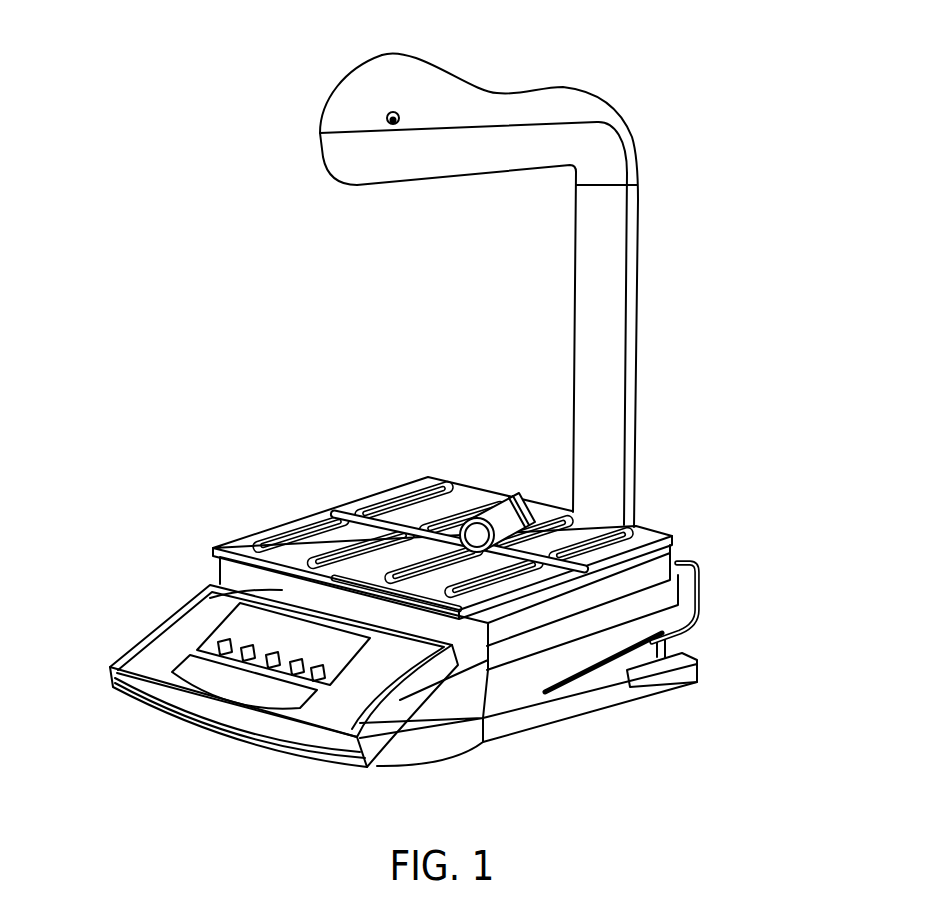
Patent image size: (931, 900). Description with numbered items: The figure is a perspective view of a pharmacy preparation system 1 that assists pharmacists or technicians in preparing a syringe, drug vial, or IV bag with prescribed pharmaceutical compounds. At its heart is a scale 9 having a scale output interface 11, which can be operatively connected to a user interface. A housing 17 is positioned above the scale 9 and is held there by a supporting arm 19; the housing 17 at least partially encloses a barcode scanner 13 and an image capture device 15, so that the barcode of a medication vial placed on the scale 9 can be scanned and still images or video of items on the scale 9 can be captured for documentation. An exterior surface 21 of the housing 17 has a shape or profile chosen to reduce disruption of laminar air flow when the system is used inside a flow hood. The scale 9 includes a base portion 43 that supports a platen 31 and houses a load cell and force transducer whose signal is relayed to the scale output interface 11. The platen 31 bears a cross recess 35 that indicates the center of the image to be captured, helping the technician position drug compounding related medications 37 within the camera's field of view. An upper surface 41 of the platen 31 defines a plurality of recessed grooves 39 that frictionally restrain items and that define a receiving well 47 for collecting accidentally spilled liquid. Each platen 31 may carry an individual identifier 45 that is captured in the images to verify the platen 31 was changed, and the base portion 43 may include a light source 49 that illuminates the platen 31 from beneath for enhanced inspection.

The pharmacy preparation system 1 is at (748, 338).
The scale 9 is at (658, 563).
The scale output interface 11 is at (263, 687).
The barcode scanner 13 is at (353, 187).
The image capture device 15 is at (375, 185).
The housing 17 is at (413, 75).
The supporting arm 19 is at (622, 285).
The exterior surface 21 is at (352, 63).
The platen 31 is at (292, 518).
The cross recess 35 is at (372, 503).
The drug compounding related medications 37 is at (503, 512).
The recessed grooves 39 is at (347, 542).
The upper surface 41 is at (560, 508).
The base portion 43 is at (228, 570).
The individual identifier 45 is at (458, 612).
The receiving well 47 is at (575, 530).
The light source 49 is at (110, 668).